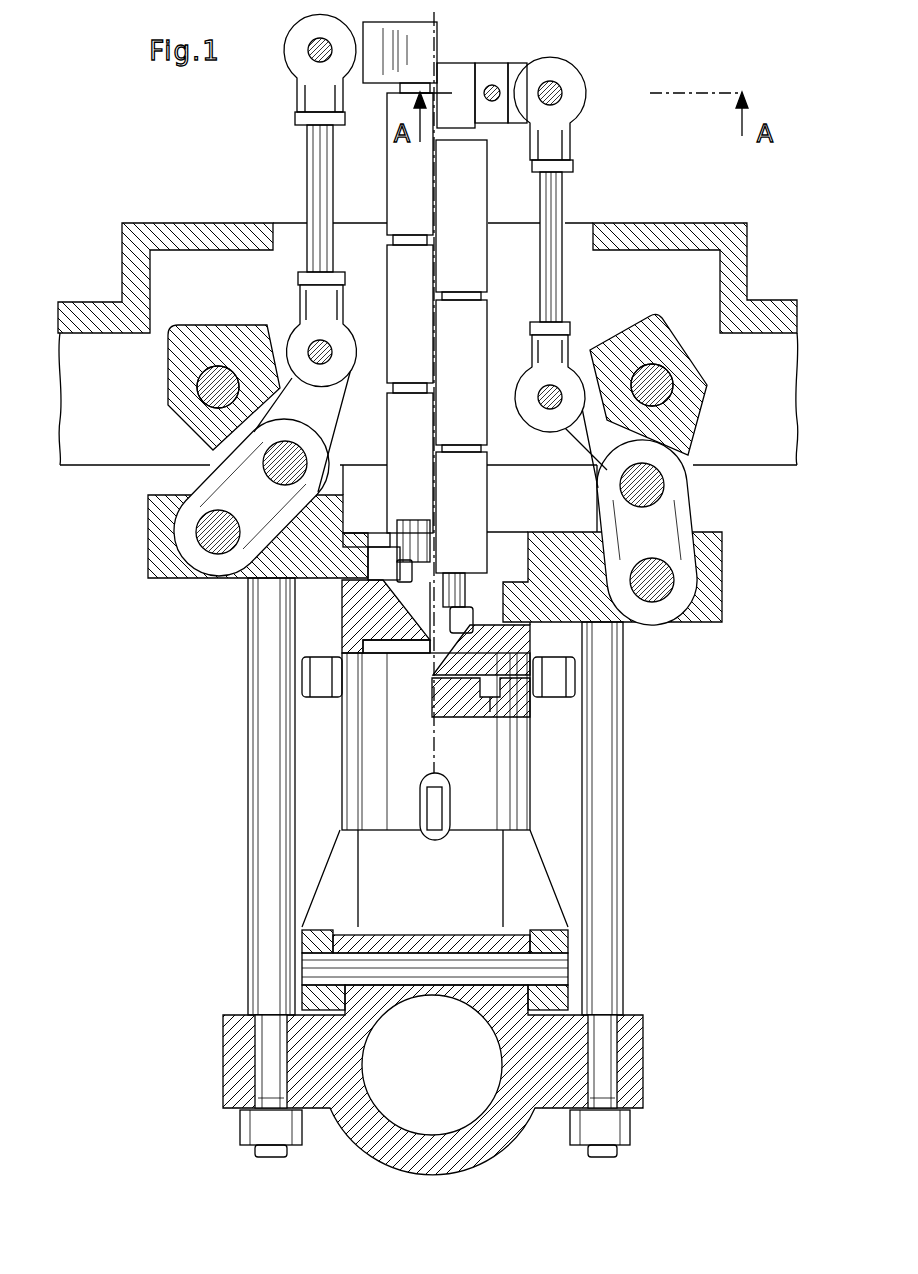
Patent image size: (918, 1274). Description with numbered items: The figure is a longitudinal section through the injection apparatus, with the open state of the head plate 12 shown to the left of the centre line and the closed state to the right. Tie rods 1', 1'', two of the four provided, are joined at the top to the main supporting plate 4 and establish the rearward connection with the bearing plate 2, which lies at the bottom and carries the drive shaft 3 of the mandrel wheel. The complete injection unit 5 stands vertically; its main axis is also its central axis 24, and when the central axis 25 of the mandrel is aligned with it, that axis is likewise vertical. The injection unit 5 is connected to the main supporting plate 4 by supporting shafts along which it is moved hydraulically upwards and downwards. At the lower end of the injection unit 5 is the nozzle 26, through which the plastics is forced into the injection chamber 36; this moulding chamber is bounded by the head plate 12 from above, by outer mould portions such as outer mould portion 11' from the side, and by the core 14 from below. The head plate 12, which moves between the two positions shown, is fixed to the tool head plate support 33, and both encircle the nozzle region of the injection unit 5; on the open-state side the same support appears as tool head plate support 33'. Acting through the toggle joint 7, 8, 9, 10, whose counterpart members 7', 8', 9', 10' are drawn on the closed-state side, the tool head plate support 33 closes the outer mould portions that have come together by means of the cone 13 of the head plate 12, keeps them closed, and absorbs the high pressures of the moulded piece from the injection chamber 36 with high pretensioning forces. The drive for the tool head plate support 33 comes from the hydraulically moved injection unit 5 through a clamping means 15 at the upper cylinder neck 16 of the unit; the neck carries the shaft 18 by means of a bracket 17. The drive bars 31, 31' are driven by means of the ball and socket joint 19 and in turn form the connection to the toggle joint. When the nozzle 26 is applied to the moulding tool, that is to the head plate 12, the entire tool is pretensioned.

The tie rod 1' is at (626, 889).
The tie rod 1'' is at (250, 867).
The bearing plate 2 is at (632, 1033).
The drive shaft 3 is at (424, 1076).
The main supporting plate 4 is at (740, 237).
The complete injection unit 5 is at (400, 186).
The toggle joint 7 is at (209, 567).
The pivot pin 7' is at (695, 597).
The toggle joint 8 is at (263, 470).
The link 8' is at (648, 516).
The toggle joint 9 is at (202, 387).
The bearing bracket 9' is at (670, 384).
The toggle joint 10 is at (305, 336).
The joint eye 10' is at (560, 369).
The outer mould portion 11' is at (438, 831).
The head plate 12 is at (350, 620).
The cone 13 is at (363, 640).
The core 14 is at (520, 703).
The clamping means 15 is at (493, 72).
The upper cylinder neck 16 is at (453, 73).
The bracket 17 is at (518, 70).
The shaft 18 is at (557, 88).
The ball and socket joint 19 is at (629, 123).
The central axis 24 is at (437, 333).
The central axis of the mandrel 25 is at (435, 752).
The nozzle 26 is at (407, 567).
The drive bar 31 is at (587, 247).
The drive bar 31' is at (311, 149).
The tool head plate support 33 is at (604, 547).
The plate 33' is at (274, 561).
The injection chamber 36 is at (533, 702).